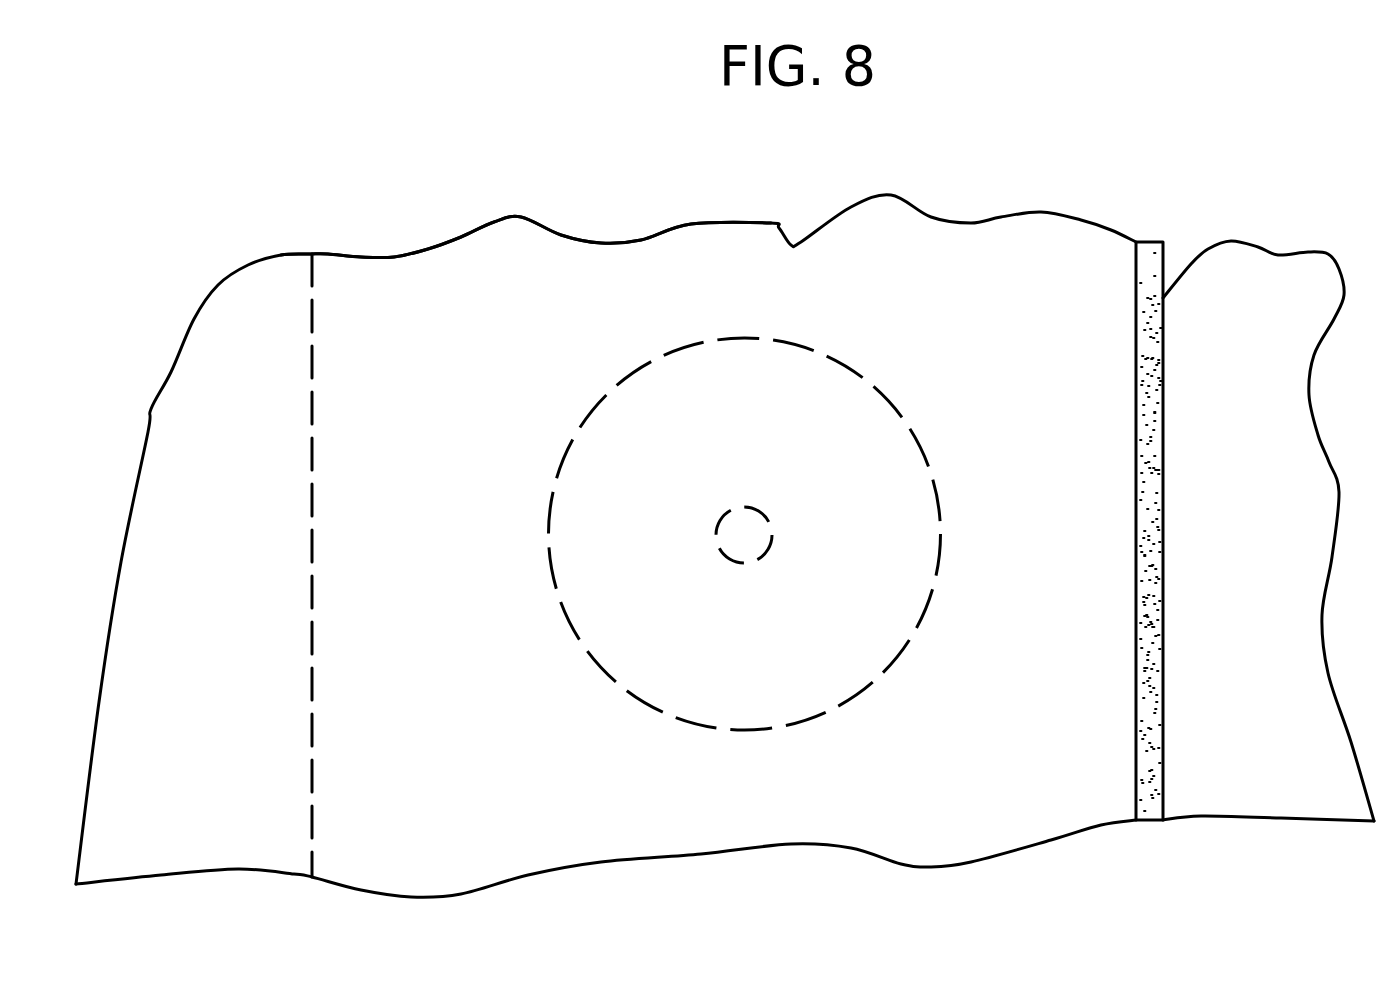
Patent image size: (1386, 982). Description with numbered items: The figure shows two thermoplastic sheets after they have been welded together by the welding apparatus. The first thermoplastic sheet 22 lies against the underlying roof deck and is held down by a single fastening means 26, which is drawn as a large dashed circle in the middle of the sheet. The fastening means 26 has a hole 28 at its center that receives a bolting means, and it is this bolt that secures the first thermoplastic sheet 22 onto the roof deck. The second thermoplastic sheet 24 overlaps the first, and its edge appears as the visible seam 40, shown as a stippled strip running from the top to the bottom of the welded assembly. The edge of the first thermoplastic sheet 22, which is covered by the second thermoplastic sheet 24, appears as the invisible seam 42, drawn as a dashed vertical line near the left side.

The first thermoplastic sheet 22 is at (1266, 786).
The second thermoplastic sheet 24 is at (520, 258).
The fastening means 26 is at (840, 702).
The hole 28 is at (742, 533).
The seam 40 is at (1165, 266).
The invisible seam 42 is at (310, 788).